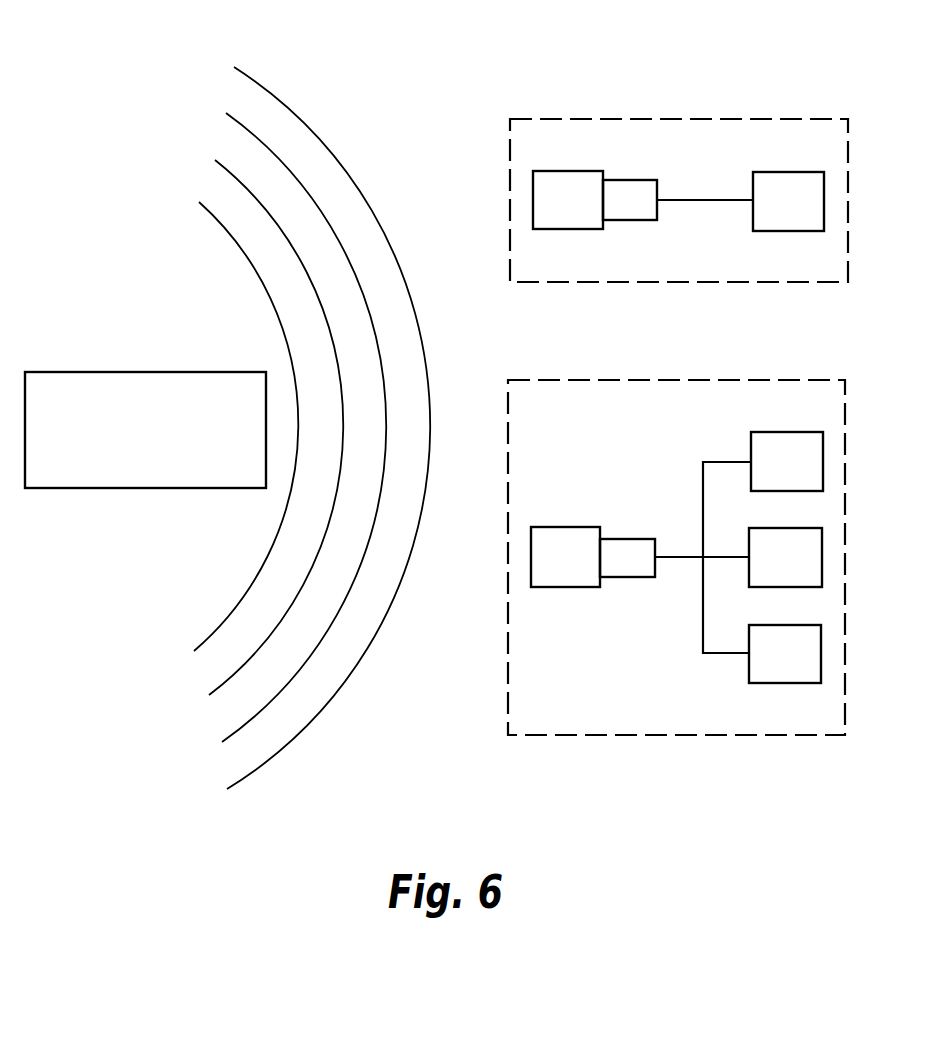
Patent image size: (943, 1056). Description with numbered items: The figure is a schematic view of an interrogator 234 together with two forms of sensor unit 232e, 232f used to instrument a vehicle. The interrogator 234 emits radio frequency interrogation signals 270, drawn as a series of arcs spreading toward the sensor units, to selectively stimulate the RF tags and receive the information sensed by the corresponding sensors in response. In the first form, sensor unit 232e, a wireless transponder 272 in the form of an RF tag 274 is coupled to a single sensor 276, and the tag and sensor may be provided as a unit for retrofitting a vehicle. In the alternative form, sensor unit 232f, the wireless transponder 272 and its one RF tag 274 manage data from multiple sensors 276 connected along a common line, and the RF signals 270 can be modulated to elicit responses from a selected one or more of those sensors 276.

The radio frequency interrogation signals 270 is at (142, 100).
The interrogator 234 is at (130, 461).
The sensor unit 232e is at (550, 118).
The sensor unit 232f is at (598, 735).
The wireless transponder 272 is at (570, 230).
The RF tag 274 is at (635, 180).
The sensor 276 is at (793, 231).